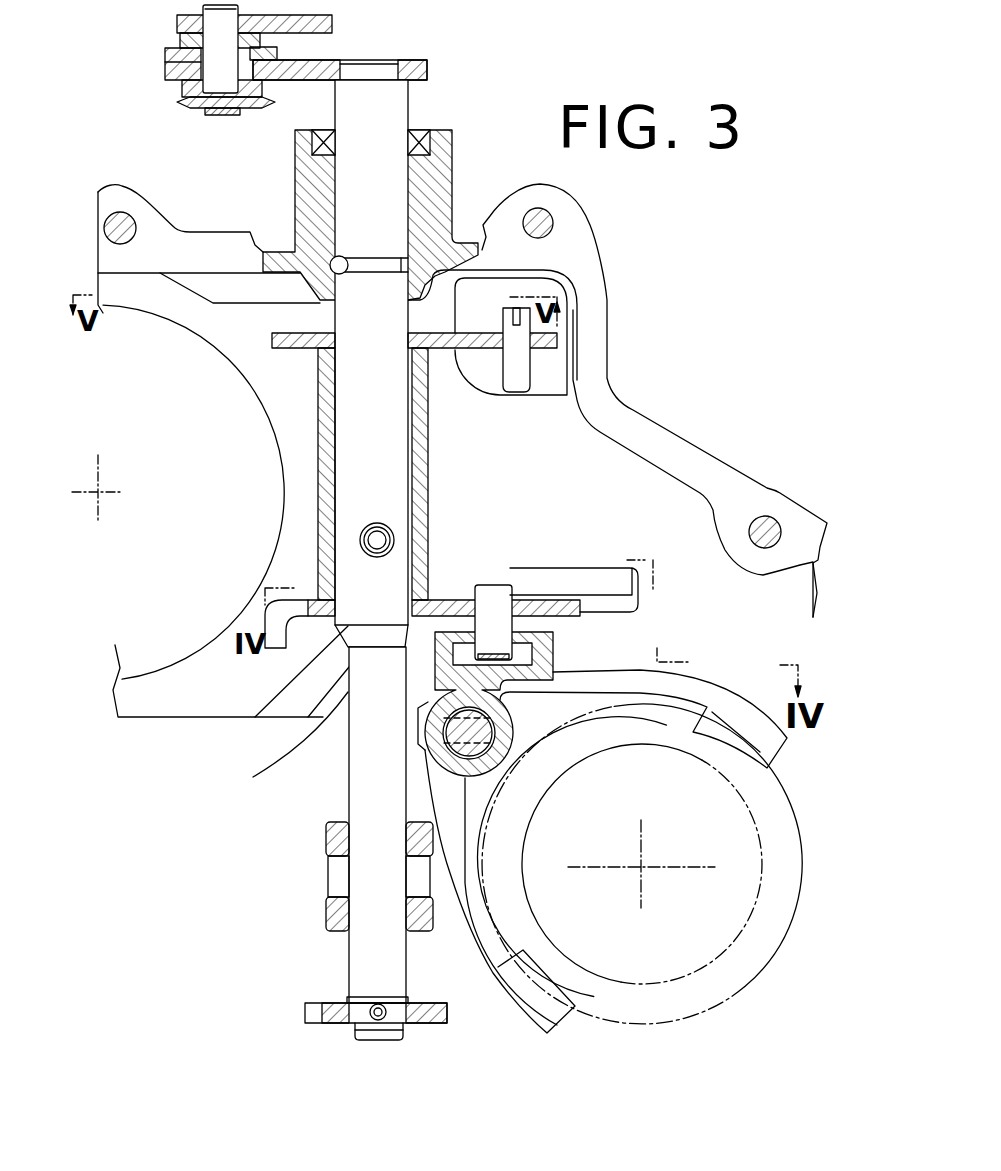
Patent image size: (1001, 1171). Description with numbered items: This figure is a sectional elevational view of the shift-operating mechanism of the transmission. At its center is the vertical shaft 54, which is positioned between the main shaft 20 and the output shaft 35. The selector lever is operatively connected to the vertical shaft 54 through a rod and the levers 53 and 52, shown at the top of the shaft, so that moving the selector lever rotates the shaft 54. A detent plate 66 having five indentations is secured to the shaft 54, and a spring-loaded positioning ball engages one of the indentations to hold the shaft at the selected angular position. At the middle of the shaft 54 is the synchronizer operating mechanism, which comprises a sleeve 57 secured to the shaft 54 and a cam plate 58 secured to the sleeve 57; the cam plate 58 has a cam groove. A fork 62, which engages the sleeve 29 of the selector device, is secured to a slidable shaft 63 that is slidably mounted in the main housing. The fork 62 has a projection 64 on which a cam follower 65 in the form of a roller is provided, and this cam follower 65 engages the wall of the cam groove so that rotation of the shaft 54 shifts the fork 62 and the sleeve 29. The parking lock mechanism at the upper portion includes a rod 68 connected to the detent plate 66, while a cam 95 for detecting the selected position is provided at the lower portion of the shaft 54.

The main shaft 20 is at (652, 860).
The sleeve 29 is at (747, 968).
The output shaft 35 is at (108, 488).
The lever 52 is at (334, 24).
The lever 53 is at (428, 67).
The vertical shaft 54 is at (405, 502).
The sleeve 57 is at (430, 462).
The cam plate 58 is at (572, 594).
The fork 62 is at (725, 697).
The slidable shaft 63 is at (513, 730).
The projection 64 is at (532, 652).
The cam follower 65 is at (505, 600).
The detent plate 66 is at (470, 350).
The rod 68 is at (533, 386).
The cam 95 is at (446, 1024).